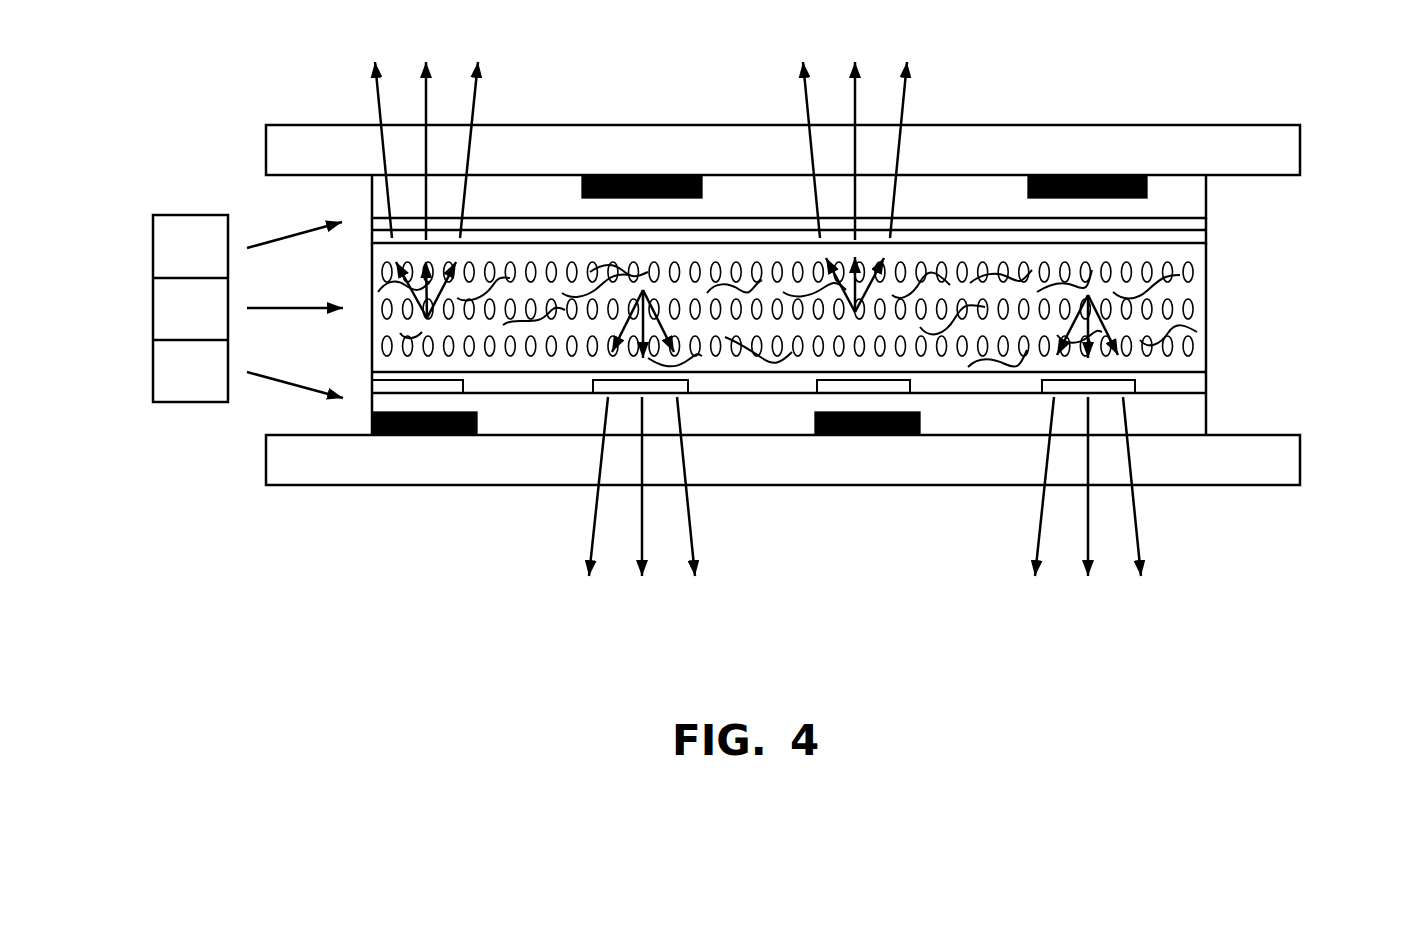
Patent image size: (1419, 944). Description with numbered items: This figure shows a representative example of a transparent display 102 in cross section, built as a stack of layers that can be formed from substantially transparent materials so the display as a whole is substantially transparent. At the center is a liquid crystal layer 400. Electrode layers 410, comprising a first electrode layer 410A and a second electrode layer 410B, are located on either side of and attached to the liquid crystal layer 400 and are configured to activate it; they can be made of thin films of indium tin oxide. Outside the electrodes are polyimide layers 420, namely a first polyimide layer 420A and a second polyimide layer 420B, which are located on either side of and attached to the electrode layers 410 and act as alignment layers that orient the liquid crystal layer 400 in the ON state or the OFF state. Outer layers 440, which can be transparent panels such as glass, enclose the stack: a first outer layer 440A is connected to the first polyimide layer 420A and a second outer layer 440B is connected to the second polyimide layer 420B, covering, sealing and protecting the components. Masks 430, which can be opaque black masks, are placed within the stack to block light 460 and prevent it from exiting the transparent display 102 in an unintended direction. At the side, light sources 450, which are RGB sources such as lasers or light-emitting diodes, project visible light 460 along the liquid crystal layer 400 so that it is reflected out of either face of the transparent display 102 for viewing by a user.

The transparent display 102 is at (792, 317).
The liquid crystal layer 400 is at (1207, 300).
The electrode layers 410 is at (871, 305).
The first electrode layer 410A is at (1197, 236).
The second electrode layer 410B is at (1197, 385).
The polyimide layers 420 is at (871, 305).
The first polyimide layer 420A is at (1200, 205).
The second polyimide layer 420B is at (1195, 423).
The masks 430 is at (647, 175).
The outer layers 440 is at (841, 303).
The first outer layer 440A is at (1300, 148).
The second outer layer 440B is at (1300, 460).
The light sources 450 is at (153, 215).
The light 460 is at (480, 100).